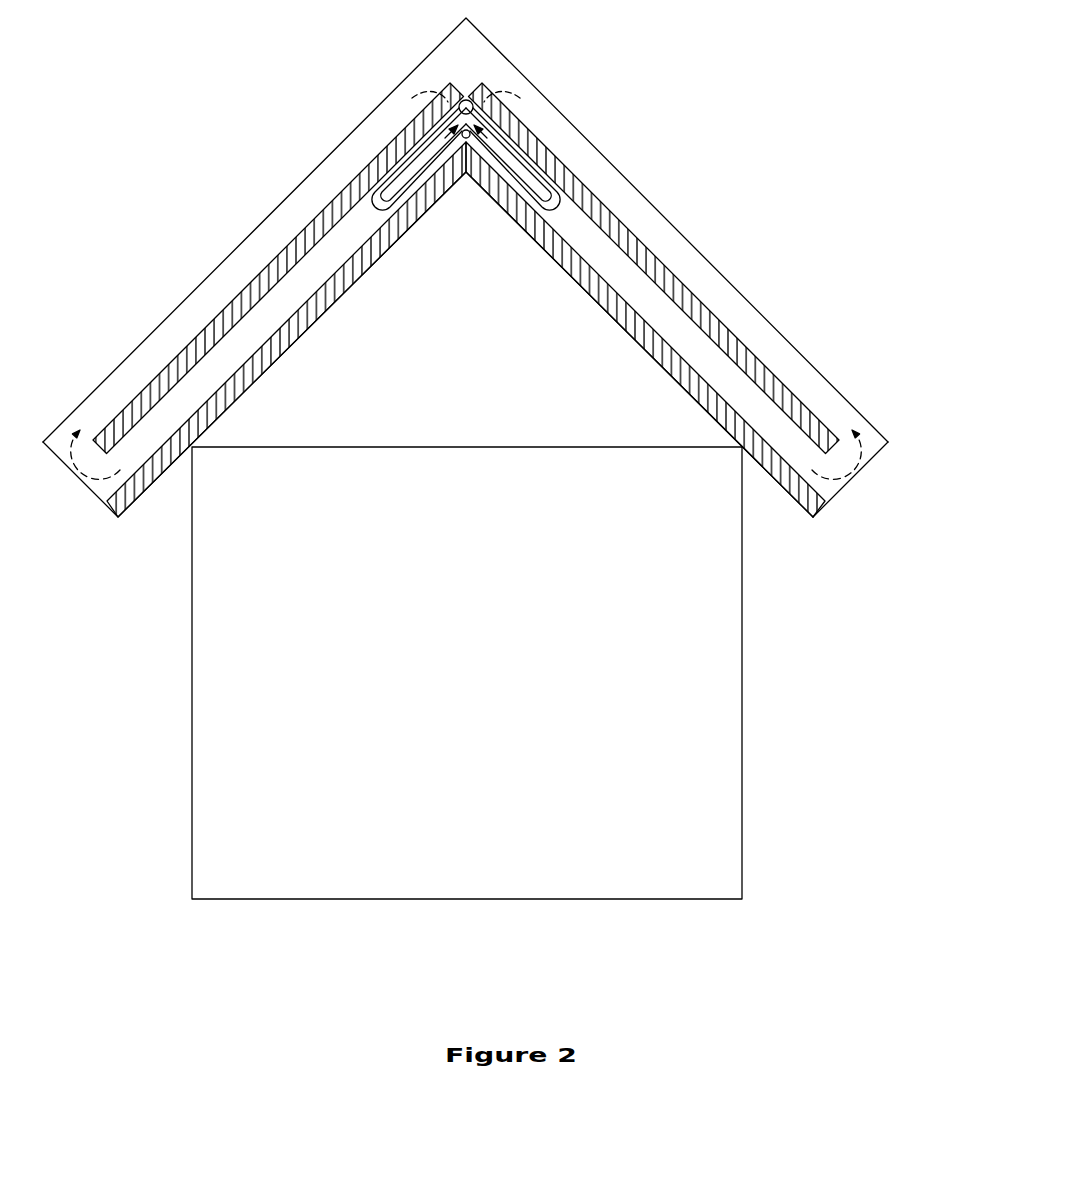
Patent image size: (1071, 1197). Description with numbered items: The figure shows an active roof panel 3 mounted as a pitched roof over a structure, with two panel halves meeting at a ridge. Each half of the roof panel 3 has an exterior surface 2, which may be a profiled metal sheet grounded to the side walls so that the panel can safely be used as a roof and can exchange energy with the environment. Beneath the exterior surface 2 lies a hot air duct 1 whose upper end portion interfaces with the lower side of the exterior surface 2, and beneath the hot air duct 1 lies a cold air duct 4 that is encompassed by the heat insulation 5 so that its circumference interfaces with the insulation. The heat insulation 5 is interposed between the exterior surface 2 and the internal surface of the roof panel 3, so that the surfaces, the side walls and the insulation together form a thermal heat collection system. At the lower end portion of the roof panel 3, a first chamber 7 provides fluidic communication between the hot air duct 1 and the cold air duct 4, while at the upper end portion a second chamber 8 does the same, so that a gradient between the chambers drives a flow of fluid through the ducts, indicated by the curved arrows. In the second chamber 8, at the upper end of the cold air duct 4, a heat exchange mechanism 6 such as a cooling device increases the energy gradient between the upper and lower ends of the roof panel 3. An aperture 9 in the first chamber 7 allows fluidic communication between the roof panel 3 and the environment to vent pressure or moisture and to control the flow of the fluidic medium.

The hot air duct 1 is at (668, 242).
The exterior surface 2 is at (633, 182).
The roof panel 3 is at (249, 236).
The cold air duct 4 is at (758, 413).
The heat insulation 5 is at (718, 327).
The heat exchange mechanism 6 is at (458, 100).
The first chamber 7 is at (853, 458).
The second chamber 8 is at (475, 98).
The aperture 9 is at (835, 497).